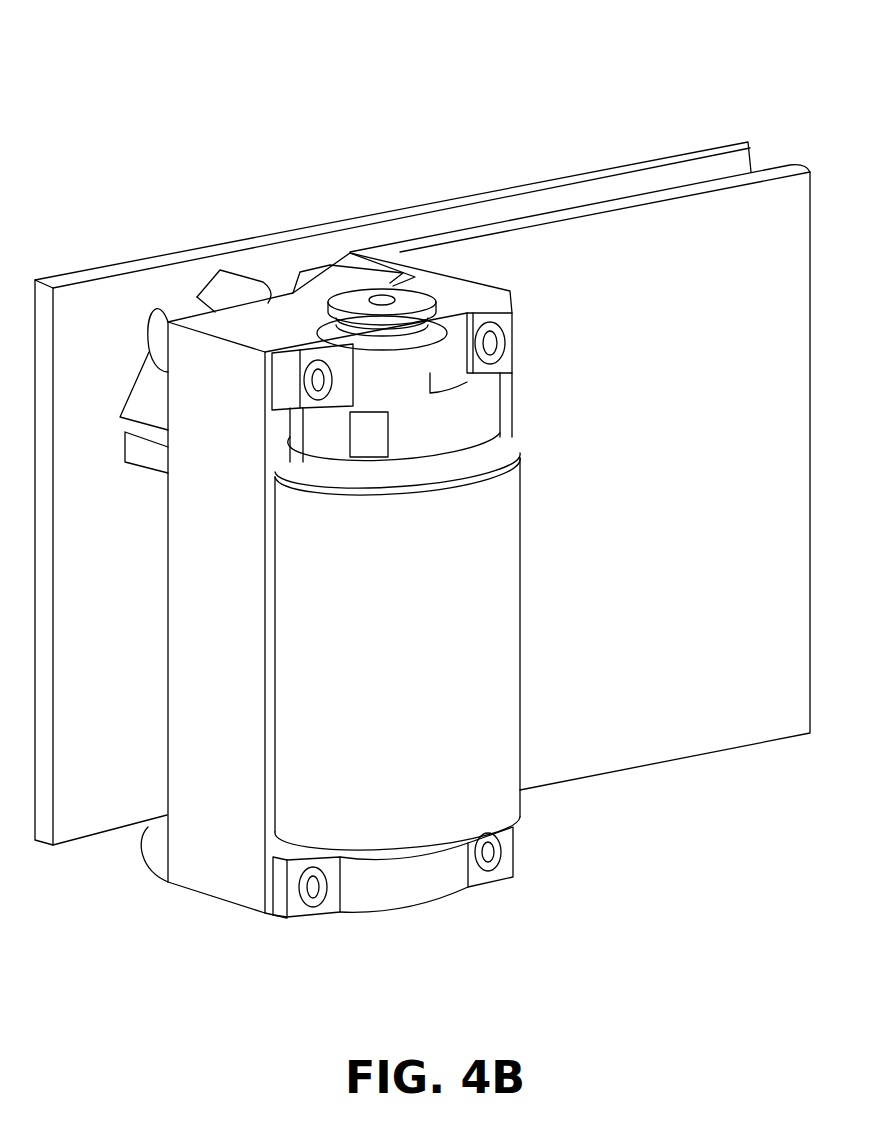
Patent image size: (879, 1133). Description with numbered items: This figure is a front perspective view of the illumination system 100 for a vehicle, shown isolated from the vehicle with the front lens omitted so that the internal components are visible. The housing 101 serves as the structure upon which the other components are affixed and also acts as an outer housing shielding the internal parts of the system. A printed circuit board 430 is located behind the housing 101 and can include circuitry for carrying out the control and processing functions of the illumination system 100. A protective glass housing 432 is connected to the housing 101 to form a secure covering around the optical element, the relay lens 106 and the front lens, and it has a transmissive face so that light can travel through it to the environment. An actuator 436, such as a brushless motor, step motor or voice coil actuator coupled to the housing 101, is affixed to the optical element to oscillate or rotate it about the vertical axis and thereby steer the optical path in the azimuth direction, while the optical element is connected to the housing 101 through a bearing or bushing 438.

The illumination system 100 is at (595, 128).
The housing 101 is at (613, 257).
The relay lens 106 is at (212, 296).
The printed circuit board 430 is at (100, 723).
The protective glass housing 432 is at (467, 742).
The actuator 436 is at (433, 427).
The bearing or bushing 438 is at (408, 305).